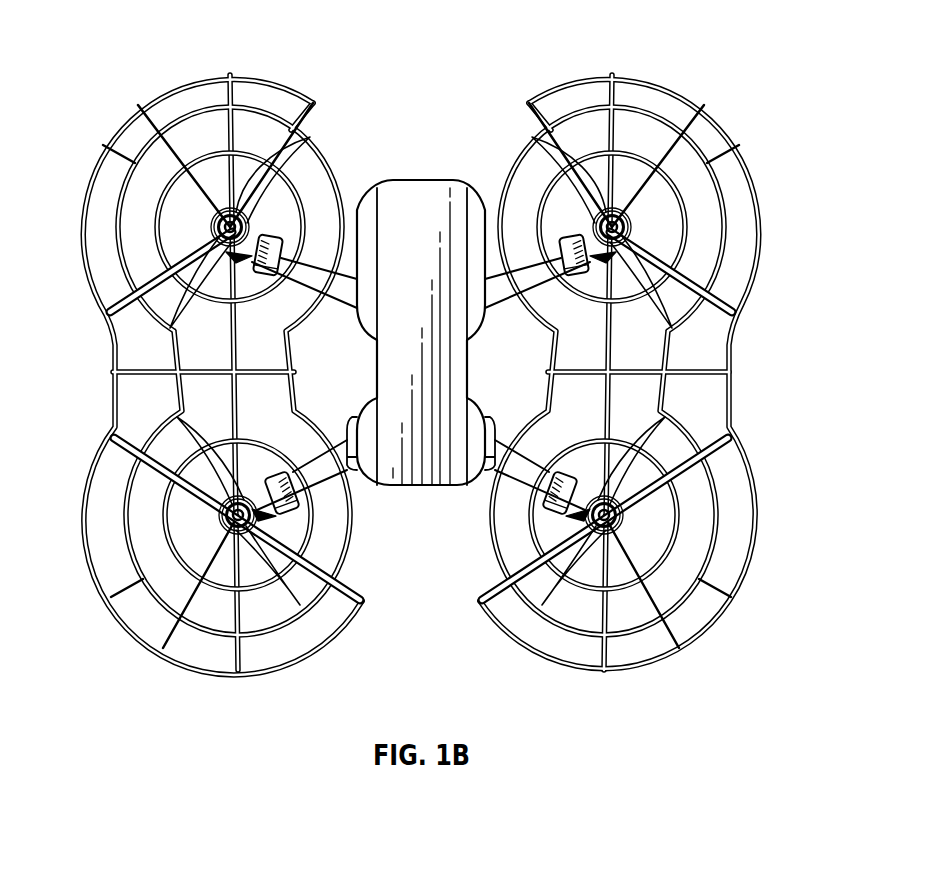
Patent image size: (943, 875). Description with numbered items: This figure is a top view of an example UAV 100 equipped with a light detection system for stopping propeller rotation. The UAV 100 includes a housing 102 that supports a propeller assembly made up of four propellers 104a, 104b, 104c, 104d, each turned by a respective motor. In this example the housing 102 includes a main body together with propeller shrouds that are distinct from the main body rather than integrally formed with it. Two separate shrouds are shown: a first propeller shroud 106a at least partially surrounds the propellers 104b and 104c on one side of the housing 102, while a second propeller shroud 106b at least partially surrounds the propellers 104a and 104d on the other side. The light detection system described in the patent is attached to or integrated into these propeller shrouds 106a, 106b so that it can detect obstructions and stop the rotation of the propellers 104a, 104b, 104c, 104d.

The UAV 100 is at (556, 36).
The housing 102 is at (424, 178).
The propeller 104a is at (728, 333).
The propeller 104b is at (117, 338).
The propeller 104c is at (313, 607).
The propeller 104d is at (740, 493).
The first propeller shroud 106a is at (163, 93).
The second propeller shroud 106b is at (736, 297).